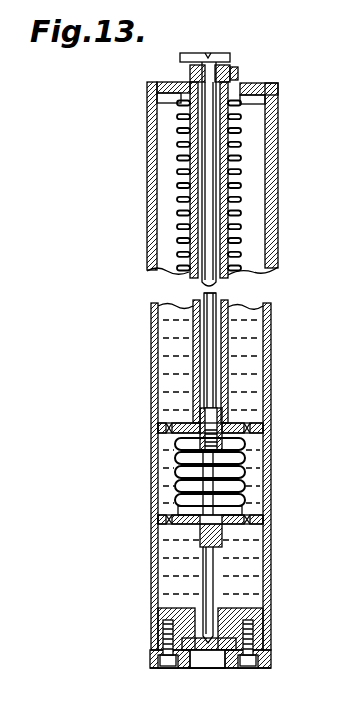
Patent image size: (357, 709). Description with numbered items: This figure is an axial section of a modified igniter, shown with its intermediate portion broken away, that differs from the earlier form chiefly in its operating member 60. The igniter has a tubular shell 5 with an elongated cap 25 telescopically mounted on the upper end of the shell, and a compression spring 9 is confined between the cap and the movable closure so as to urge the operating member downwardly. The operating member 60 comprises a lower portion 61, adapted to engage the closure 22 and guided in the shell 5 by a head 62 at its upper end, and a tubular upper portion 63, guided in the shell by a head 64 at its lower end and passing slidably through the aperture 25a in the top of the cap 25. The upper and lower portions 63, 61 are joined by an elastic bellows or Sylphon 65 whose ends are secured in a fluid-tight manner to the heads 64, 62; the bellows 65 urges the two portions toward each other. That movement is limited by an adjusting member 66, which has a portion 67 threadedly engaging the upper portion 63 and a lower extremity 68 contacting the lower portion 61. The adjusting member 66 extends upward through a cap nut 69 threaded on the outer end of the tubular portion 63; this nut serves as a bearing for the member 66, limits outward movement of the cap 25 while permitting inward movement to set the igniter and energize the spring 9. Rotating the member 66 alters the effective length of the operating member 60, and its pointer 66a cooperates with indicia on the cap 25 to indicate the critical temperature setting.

The tubular shell 5 is at (270, 408).
The compression spring 9 is at (237, 187).
The closure 22 is at (216, 668).
The cap 25 is at (277, 236).
The opening in the top of the cap 25a is at (240, 84).
The operating member 60 is at (232, 303).
The lower portion of operating member 61 is at (214, 569).
The head 62 is at (262, 523).
The tubular upper portion 63 is at (229, 331).
The head 64 is at (262, 432).
The elastic bellows 65 is at (245, 484).
The adjusting member 66 is at (211, 367).
The pointer 66a is at (188, 52).
The threaded portion 67 is at (193, 420).
The lower extremity 68 is at (178, 510).
The cap nut 69 is at (239, 72).